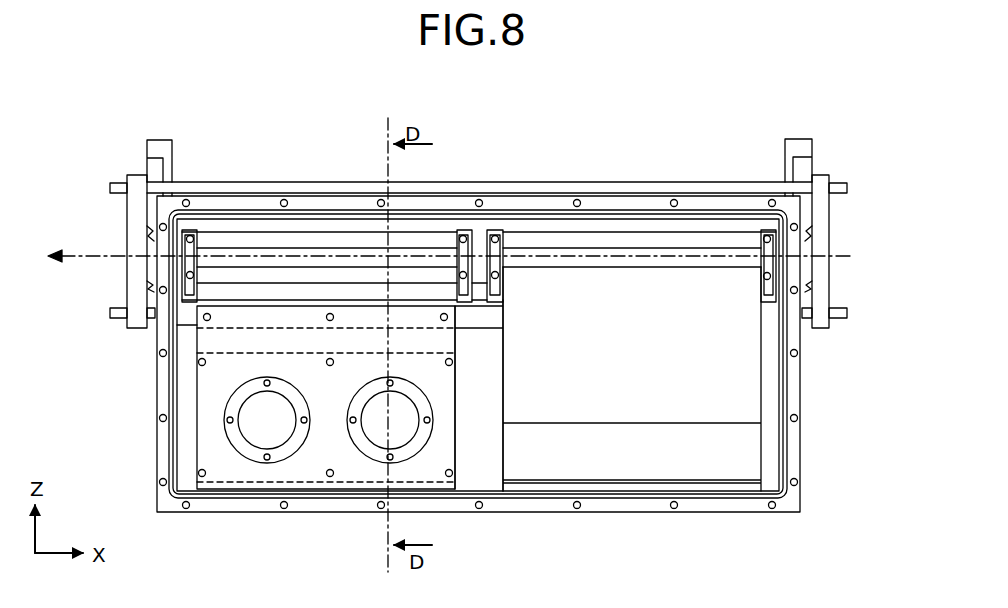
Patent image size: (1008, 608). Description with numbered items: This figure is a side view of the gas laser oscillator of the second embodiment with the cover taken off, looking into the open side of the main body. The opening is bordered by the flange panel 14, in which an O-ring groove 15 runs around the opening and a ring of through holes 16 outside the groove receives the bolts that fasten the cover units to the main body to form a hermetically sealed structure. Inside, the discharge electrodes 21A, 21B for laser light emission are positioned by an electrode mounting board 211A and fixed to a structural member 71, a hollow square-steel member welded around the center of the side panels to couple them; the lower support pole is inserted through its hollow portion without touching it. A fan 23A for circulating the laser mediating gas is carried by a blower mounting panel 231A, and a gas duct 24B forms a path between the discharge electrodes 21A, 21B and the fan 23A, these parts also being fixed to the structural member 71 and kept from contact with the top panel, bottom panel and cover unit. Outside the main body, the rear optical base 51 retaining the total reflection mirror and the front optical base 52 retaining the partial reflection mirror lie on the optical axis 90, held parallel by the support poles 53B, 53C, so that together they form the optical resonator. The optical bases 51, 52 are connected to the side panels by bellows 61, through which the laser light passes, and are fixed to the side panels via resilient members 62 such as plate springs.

The flange panel 14 is at (167, 503).
The O-ring groove 15 is at (743, 512).
The through holes 16 is at (578, 192).
The discharge electrode 21A is at (258, 265).
The discharge electrode 21B is at (697, 240).
The electrode mounting board 211A is at (460, 235).
The blower mounting panel 231A is at (197, 397).
The fan 23A is at (243, 443).
The gas duct 24B is at (761, 382).
The rear optical base 51 is at (823, 287).
The front optical base 52 is at (125, 321).
The support pole 53B is at (455, 183).
The support pole 53C is at (847, 314).
The bellows 61 is at (147, 222).
The resilient member 62 is at (147, 146).
The structural member 71 is at (478, 327).
The optical axis 90 is at (68, 263).